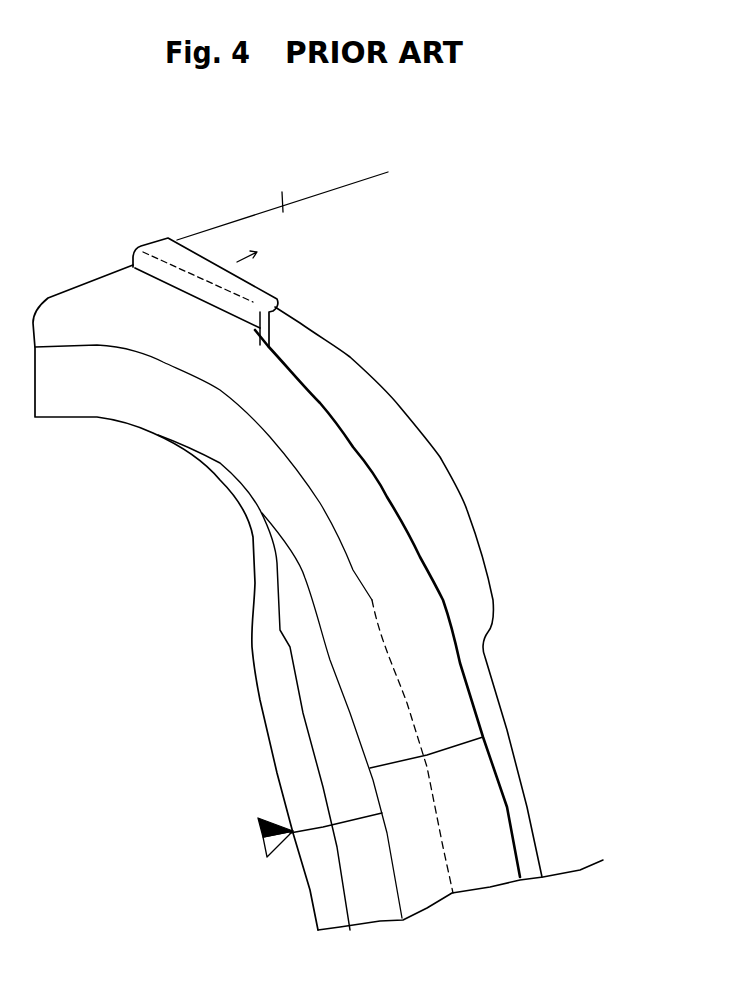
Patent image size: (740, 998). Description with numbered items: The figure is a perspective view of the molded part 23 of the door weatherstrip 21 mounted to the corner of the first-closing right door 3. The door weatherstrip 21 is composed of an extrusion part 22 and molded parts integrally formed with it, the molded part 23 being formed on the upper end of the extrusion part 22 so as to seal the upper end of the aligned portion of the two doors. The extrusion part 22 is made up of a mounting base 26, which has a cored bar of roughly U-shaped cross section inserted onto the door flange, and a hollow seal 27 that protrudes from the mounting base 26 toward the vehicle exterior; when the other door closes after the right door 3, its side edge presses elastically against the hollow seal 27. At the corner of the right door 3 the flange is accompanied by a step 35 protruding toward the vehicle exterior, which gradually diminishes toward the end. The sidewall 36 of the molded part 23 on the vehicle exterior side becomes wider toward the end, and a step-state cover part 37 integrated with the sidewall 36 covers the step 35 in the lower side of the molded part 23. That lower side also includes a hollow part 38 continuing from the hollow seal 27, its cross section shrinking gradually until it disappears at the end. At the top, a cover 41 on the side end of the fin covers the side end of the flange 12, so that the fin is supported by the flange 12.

The right door 3 is at (338, 192).
The flange 12 is at (272, 190).
The door weatherstrip 21 is at (264, 781).
The extrusion part 22 is at (317, 892).
The molded part 23 is at (252, 648).
The mounting base 26 is at (308, 863).
The hollow seal 27 is at (383, 863).
The step 35 is at (453, 797).
The sidewall 36 is at (322, 417).
The cover part 37 is at (457, 677).
The hollow part 38 is at (313, 715).
The cover 41 is at (190, 258).